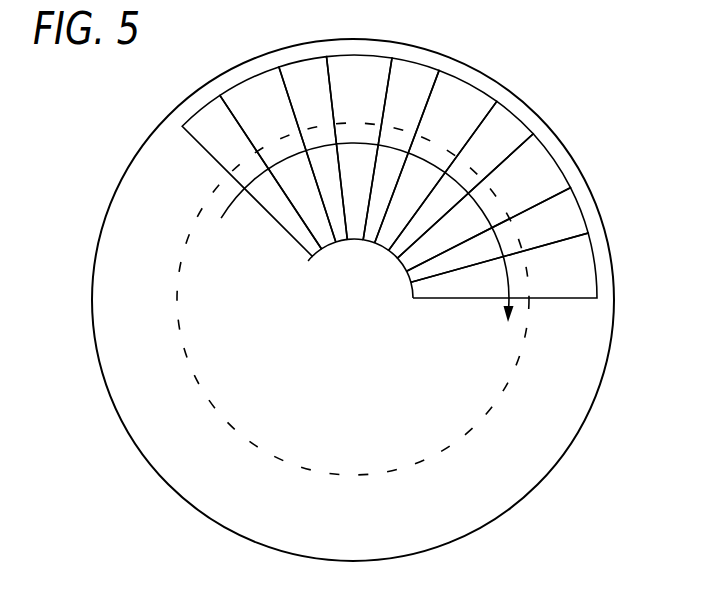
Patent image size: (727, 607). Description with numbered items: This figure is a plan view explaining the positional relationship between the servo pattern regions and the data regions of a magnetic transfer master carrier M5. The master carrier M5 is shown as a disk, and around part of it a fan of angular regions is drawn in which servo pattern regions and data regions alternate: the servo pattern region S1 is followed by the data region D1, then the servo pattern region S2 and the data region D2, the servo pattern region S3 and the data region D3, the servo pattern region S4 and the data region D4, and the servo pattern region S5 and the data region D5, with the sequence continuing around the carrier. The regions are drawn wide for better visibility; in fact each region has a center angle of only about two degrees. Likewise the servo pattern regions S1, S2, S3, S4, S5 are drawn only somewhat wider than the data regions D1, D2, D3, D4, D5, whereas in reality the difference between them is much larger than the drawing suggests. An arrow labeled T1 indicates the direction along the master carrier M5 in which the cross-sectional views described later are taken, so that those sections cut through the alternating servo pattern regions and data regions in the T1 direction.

The magnetic transfer master carrier M5 is at (527, 447).
The T1 direction T1 is at (368, 245).
The servo pattern region S1 is at (251, 175).
The data region D1 is at (278, 158).
The servo pattern region S2 is at (313, 149).
The data region D2 is at (360, 147).
The servo pattern region S3 is at (401, 150).
The data region D3 is at (436, 160).
The servo pattern region S4 is at (461, 179).
The data region D4 is at (484, 202).
The servo pattern region S5 is at (498, 235).
The data region D5 is at (504, 265).